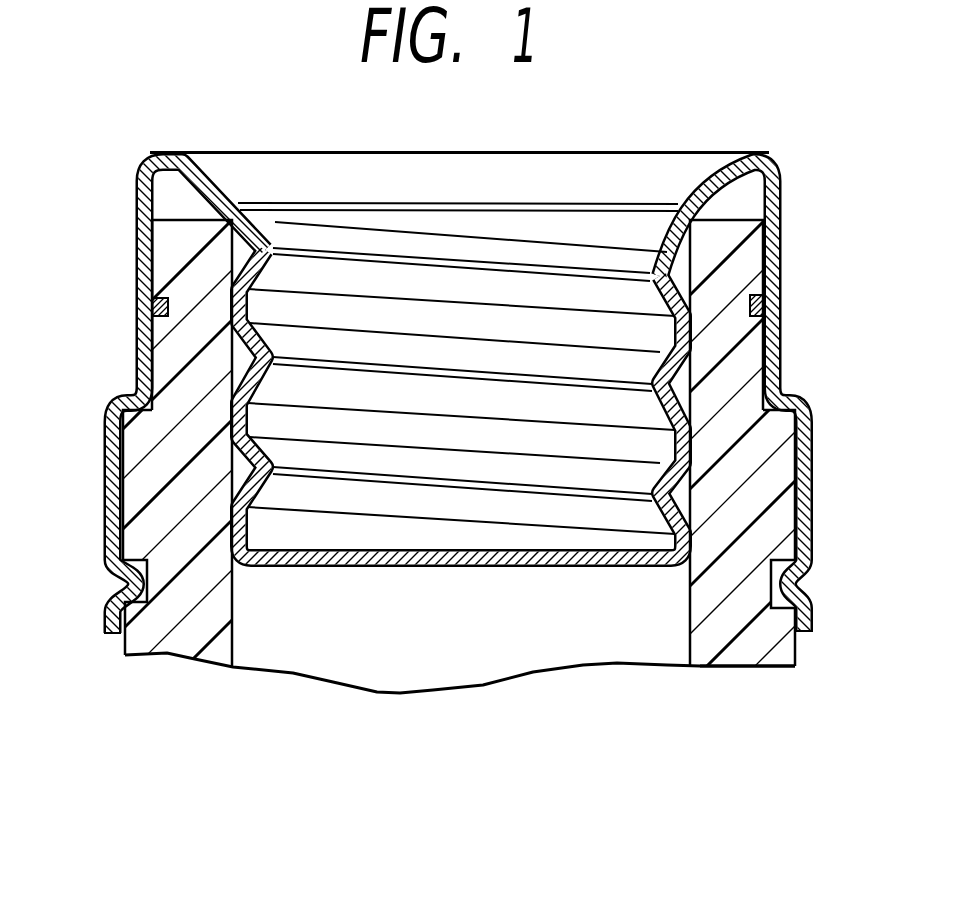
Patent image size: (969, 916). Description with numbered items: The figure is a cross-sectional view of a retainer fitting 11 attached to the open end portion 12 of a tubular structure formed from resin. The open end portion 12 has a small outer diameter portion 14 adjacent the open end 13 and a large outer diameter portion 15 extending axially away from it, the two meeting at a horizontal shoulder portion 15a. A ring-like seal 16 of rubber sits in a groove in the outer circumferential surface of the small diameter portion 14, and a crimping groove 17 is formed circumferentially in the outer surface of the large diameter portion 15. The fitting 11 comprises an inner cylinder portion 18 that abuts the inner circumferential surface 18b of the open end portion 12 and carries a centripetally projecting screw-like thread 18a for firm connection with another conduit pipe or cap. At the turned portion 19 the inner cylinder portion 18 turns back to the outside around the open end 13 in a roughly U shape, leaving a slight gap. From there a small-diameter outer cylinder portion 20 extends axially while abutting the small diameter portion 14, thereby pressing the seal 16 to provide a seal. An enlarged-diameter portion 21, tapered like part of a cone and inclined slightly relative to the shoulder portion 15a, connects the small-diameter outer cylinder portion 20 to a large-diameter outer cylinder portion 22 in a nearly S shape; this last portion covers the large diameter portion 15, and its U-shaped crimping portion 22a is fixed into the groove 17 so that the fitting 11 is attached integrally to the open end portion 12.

The retainer fitting 11 is at (788, 146).
The open end portion 12 is at (763, 685).
The open end 13 is at (178, 196).
The small outer diameter portion 14 is at (170, 250).
The large outer diameter portion 15 is at (140, 470).
The shoulder portion 15a is at (777, 397).
The ring-like seal 16 is at (160, 307).
The crimping groove 17 is at (780, 600).
The inner cylinder portion 18 is at (428, 563).
The screw-like thread 18a is at (273, 230).
The container body 18b is at (290, 650).
The turned portion 19 is at (710, 190).
The small-diameter outer cylinder portion 20 is at (778, 258).
The enlarged-diameter portion 21 is at (127, 397).
The large-diameter outer cylinder portion 22 is at (813, 470).
The crimping portion 22a is at (115, 588).